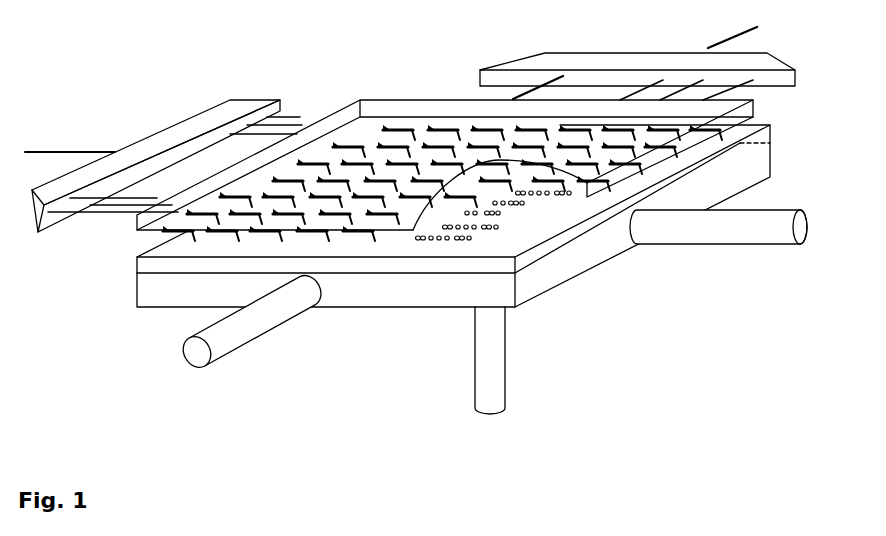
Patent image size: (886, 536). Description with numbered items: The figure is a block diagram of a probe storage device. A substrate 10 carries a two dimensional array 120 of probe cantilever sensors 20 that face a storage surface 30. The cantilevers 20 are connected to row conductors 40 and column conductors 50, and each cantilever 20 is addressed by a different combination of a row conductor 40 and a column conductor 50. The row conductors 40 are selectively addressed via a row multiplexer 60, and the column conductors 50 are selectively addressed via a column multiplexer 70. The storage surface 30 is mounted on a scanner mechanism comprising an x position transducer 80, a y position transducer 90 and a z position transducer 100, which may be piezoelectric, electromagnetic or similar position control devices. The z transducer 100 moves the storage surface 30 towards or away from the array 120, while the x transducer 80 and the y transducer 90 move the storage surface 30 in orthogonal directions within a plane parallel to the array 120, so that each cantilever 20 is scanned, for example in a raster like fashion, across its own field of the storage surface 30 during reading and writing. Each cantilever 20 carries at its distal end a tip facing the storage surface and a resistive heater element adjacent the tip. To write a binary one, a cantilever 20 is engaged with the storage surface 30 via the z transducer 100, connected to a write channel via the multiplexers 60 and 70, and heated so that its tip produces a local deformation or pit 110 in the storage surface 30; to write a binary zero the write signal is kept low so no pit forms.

The substrate 10 is at (357, 100).
The probe cantilever sensor 20 is at (500, 183).
The storage surface 30 is at (135, 265).
The row conductor 40 is at (293, 100).
The column conductor 50 is at (520, 88).
The row multiplexer 60 is at (240, 98).
The column multiplexer 70 is at (793, 60).
The x position transducer 80 is at (722, 243).
The y position transducer 90 is at (273, 330).
The z position transducer 100 is at (505, 375).
The pit 110 is at (430, 237).
The two dimensional array 120 is at (163, 236).